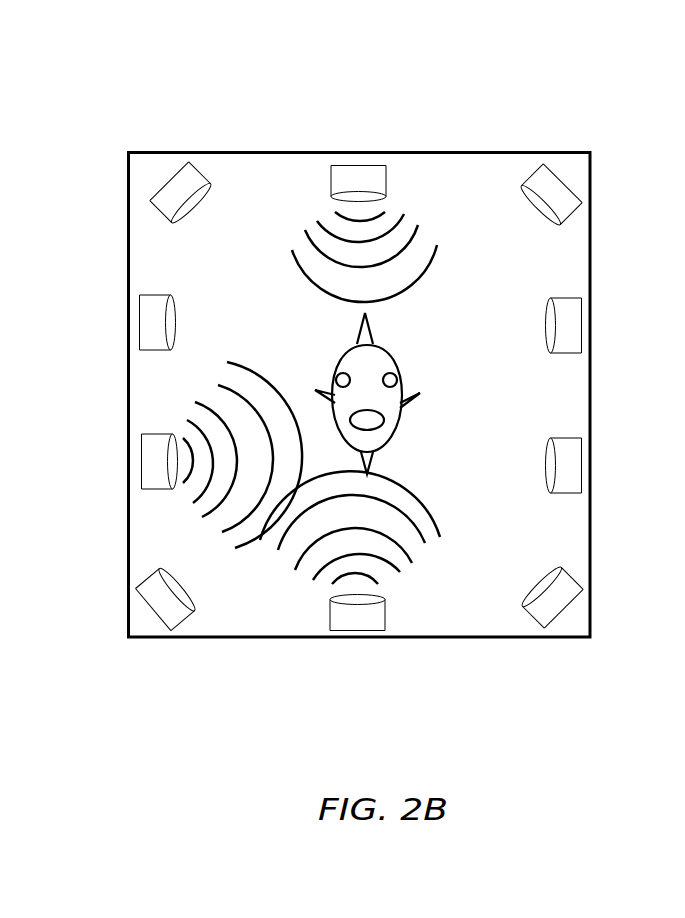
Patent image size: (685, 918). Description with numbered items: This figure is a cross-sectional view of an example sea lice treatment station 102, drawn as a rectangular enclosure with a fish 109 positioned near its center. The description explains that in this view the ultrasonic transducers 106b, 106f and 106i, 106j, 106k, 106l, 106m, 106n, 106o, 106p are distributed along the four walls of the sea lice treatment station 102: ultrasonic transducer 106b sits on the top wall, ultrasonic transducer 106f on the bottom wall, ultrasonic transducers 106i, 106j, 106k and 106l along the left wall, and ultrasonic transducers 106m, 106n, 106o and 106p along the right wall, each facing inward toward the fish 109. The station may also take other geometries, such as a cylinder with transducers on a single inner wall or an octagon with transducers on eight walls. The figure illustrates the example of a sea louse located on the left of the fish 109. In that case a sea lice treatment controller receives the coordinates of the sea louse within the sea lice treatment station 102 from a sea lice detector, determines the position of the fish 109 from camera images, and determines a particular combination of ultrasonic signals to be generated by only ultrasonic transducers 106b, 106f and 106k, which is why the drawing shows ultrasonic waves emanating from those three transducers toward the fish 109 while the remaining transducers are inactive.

The sea lice treatment station 102 is at (154, 86).
The ultrasonic transducer 106b is at (359, 165).
The ultrasonic transducer 106f is at (357, 632).
The ultrasonic transducer 106i is at (182, 168).
The ultrasonic transducer 106j is at (140, 318).
The ultrasonic transducer 106k is at (140, 460).
The ultrasonic transducer 106l is at (142, 587).
The ultrasonic transducer 106m is at (547, 625).
The ultrasonic transducer 106n is at (582, 469).
The ultrasonic transducer 106o is at (582, 334).
The ultrasonic transducer 106p is at (578, 206).
The fish 109 is at (402, 433).